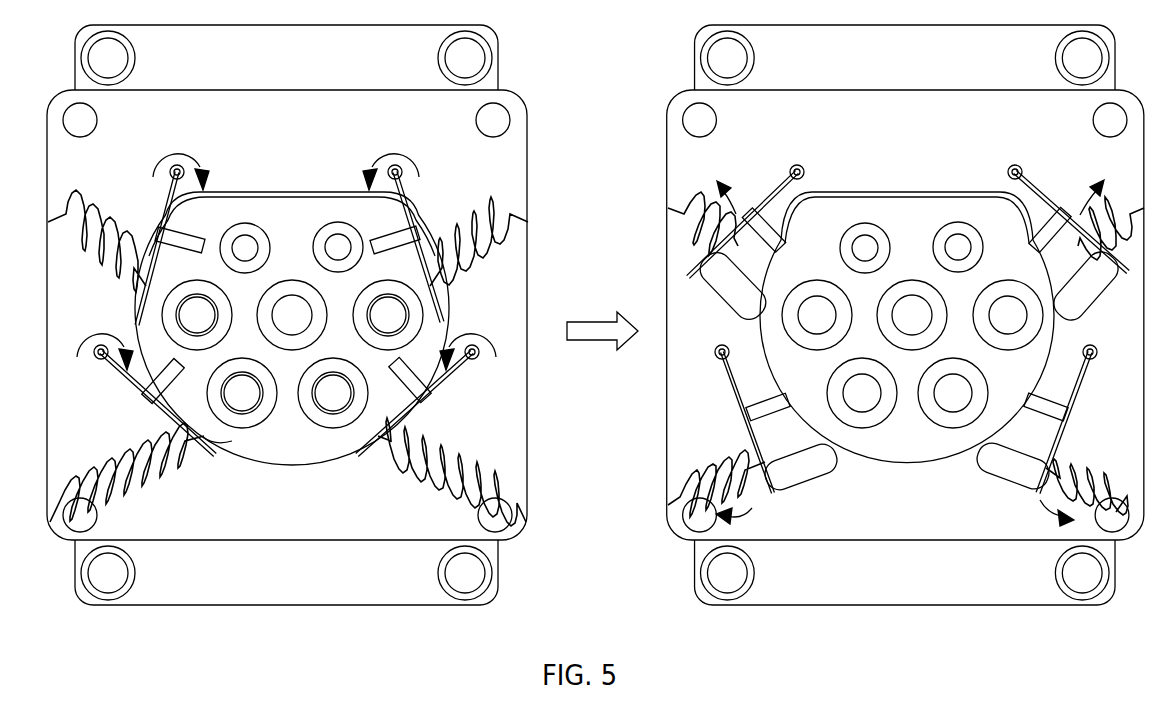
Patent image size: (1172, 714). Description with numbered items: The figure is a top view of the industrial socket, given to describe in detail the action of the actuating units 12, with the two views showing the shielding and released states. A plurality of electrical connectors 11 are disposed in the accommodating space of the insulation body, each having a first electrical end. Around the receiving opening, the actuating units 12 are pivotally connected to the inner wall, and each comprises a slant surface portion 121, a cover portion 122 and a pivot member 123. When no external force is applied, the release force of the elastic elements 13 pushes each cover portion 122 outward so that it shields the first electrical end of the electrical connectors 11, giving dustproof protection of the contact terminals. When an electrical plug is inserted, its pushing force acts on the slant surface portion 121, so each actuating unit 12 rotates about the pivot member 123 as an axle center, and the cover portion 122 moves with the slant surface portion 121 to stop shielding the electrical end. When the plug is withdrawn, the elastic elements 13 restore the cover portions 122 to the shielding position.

The electrical connectors 11 is at (915, 315).
The actuating units 12 is at (618, 372).
The elastic elements 13 is at (50, 528).
The slant surface portion 121 is at (157, 386).
The cover portion 122 is at (215, 440).
The pivot member 123 is at (98, 359).